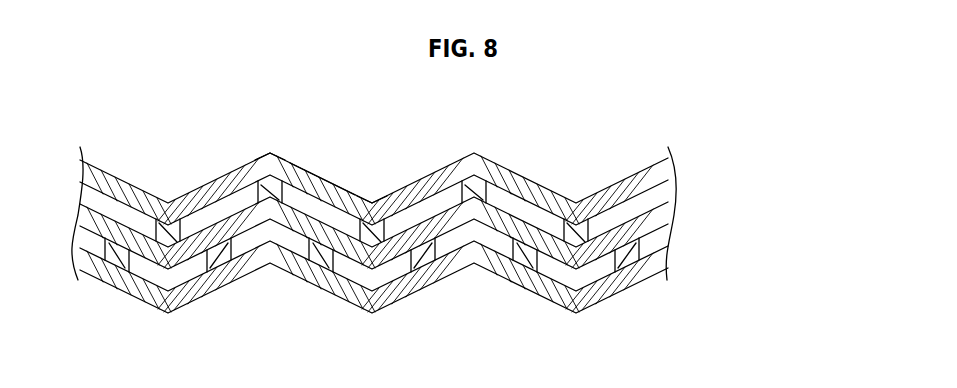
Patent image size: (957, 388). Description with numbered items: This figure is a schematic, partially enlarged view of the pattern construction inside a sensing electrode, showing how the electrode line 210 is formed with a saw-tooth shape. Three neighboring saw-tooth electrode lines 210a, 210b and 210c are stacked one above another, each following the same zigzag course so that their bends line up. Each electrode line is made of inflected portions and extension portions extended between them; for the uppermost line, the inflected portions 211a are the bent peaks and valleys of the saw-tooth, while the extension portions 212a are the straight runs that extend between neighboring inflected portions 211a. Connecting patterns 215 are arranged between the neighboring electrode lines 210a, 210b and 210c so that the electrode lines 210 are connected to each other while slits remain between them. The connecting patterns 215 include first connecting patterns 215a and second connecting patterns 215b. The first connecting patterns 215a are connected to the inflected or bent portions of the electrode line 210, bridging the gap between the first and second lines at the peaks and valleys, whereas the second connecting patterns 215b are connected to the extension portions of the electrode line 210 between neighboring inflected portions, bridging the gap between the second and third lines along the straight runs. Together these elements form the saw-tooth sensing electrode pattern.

The electrode line 210 is at (463, 230).
The electrode line 210a is at (673, 163).
The electrode line 210b is at (672, 212).
The electrode line 210c is at (670, 257).
The inflected portion 211a is at (375, 203).
The extension portion 212a is at (313, 172).
The connecting pattern 215 is at (372, 237).
The first connecting pattern 215a is at (262, 192).
The second connecting pattern 215b is at (236, 248).